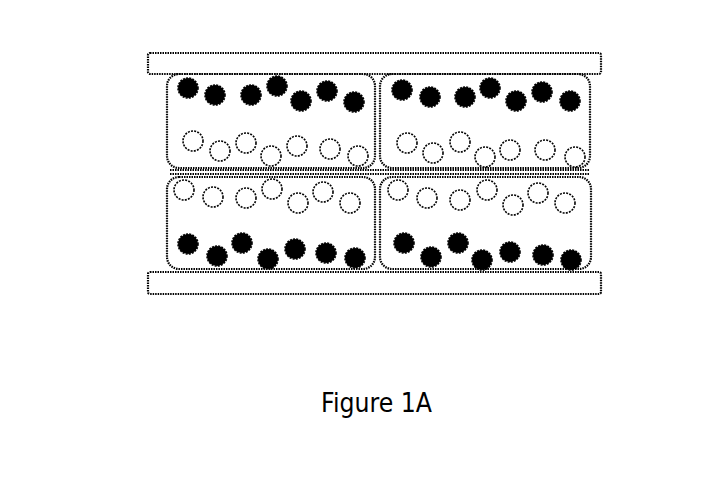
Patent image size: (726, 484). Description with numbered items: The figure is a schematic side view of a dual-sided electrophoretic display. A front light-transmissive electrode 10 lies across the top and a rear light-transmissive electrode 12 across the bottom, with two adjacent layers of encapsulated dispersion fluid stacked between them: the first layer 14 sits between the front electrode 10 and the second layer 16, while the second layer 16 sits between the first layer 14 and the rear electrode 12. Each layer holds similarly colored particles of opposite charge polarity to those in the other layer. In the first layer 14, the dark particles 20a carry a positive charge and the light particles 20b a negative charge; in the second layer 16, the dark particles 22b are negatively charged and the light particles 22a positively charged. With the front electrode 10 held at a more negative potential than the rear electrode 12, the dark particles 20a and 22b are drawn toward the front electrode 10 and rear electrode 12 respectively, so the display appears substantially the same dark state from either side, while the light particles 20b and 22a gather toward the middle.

The front light-transmissive electrode 10 is at (150, 62).
The rear light-transmissive electrode 12 is at (148, 277).
The first layer 14 is at (167, 140).
The second layer 16 is at (167, 232).
The dark colored particles 20a is at (575, 102).
The light colored particles 20b is at (584, 160).
The light colored particles 22a is at (575, 203).
The dark colored particles 22b is at (578, 257).